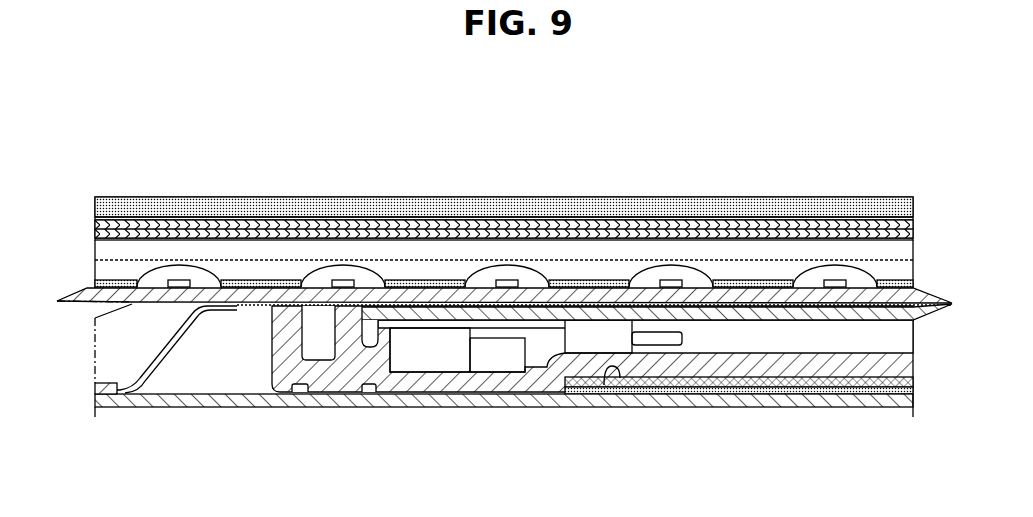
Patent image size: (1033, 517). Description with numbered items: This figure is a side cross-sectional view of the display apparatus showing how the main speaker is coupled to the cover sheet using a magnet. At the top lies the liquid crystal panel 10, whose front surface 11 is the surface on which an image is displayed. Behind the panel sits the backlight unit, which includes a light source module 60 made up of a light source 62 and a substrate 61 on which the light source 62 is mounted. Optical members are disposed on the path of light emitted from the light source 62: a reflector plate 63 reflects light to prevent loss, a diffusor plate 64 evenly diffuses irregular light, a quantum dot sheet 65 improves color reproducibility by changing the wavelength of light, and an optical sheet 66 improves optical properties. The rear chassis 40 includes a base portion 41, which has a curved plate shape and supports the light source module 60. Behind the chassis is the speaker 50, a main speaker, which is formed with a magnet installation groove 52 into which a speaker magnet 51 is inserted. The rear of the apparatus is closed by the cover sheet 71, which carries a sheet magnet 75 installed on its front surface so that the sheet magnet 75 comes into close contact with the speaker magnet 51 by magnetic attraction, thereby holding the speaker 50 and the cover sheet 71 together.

The liquid crystal panel 10 is at (295, 212).
The front surface 11 is at (236, 197).
The rear chassis 40 is at (165, 363).
The base portion 41 is at (238, 306).
The speaker 50 is at (352, 364).
The speaker magnet 51 is at (913, 382).
The magnet installation groove 52 is at (605, 385).
The light source module 60 is at (521, 180).
The substrate 61 is at (862, 283).
The light source 62 is at (827, 280).
The reflector plate 63 is at (753, 280).
The diffusor plate 64 is at (697, 248).
The quantum dot sheet 65 is at (640, 237).
The optical sheet 66 is at (597, 218).
The cover sheet 71 is at (678, 408).
The sheet magnet 75 is at (795, 395).